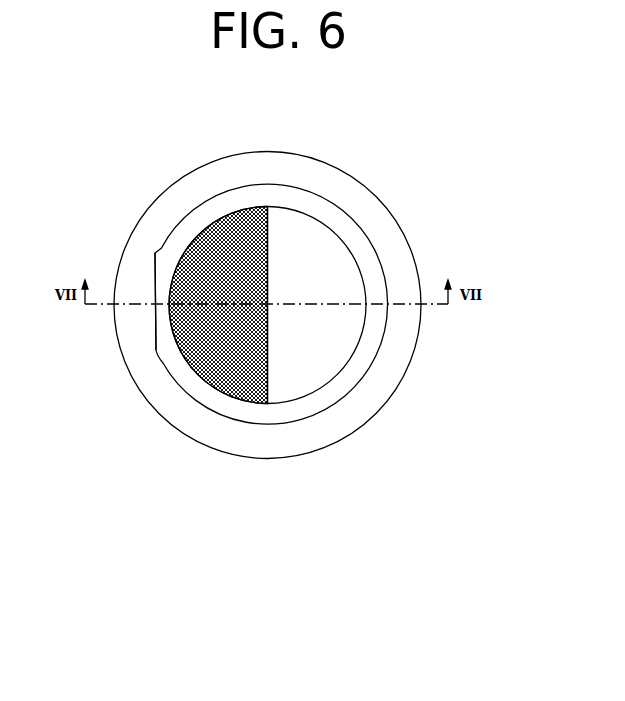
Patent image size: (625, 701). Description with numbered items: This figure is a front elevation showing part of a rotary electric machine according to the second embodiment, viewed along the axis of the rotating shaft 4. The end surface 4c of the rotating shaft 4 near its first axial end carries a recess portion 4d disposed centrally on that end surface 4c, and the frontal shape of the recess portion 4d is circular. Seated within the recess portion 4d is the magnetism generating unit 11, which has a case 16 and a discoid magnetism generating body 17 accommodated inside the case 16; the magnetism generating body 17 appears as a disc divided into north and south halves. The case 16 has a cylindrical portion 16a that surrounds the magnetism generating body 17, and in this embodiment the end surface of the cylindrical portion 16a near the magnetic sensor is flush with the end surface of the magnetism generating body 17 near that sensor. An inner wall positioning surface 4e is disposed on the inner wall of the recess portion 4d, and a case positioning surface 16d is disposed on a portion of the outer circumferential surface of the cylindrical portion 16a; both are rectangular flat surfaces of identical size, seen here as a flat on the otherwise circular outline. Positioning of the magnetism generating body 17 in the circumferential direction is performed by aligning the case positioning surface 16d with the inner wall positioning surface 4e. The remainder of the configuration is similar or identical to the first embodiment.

The rotating shaft 4 is at (317, 158).
The end surface 4c is at (312, 437).
The recess portion 4d is at (226, 409).
The inner wall positioning surface 4e is at (160, 330).
The magnetism generating unit 11 is at (323, 193).
The case 16 is at (370, 242).
The cylindrical portion 16a is at (195, 230).
The case positioning surface 16d is at (156, 341).
The magnetism generating body 17 is at (315, 352).